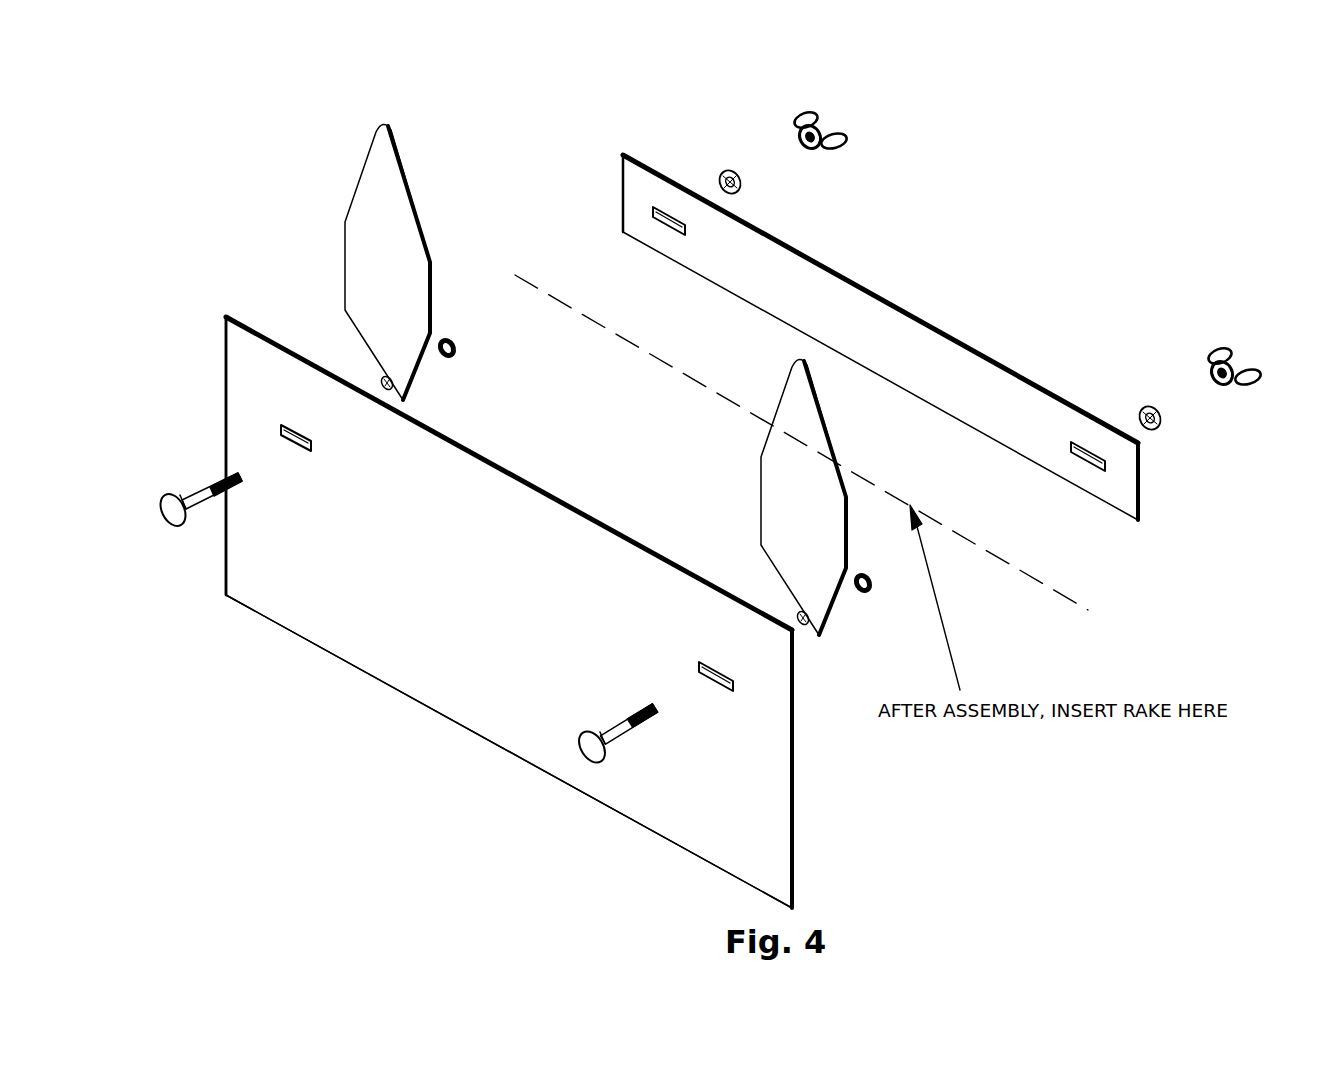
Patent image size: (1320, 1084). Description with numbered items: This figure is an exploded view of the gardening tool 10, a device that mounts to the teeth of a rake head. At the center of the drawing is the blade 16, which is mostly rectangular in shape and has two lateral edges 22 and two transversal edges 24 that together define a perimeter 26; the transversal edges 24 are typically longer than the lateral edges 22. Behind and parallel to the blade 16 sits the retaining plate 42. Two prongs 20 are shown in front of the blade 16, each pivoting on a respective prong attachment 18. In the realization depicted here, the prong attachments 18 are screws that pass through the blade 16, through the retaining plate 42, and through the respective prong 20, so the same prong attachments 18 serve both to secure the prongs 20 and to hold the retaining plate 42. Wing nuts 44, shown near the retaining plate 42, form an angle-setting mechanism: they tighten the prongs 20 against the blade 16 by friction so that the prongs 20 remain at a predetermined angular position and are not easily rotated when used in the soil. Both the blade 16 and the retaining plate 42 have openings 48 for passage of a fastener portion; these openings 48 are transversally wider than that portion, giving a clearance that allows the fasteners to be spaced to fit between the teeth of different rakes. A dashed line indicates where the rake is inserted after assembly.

The gardening tool 10 is at (511, 148).
The blade 16 is at (500, 641).
The prong attachment 18 is at (197, 495).
The prong 20 is at (406, 299).
The lateral edge 22 is at (792, 804).
The transversal edge 24 is at (377, 677).
The perimeter 26 is at (226, 317).
The retaining plate 42 is at (846, 336).
The wing nut 44 is at (810, 112).
The opening 48 is at (705, 660).